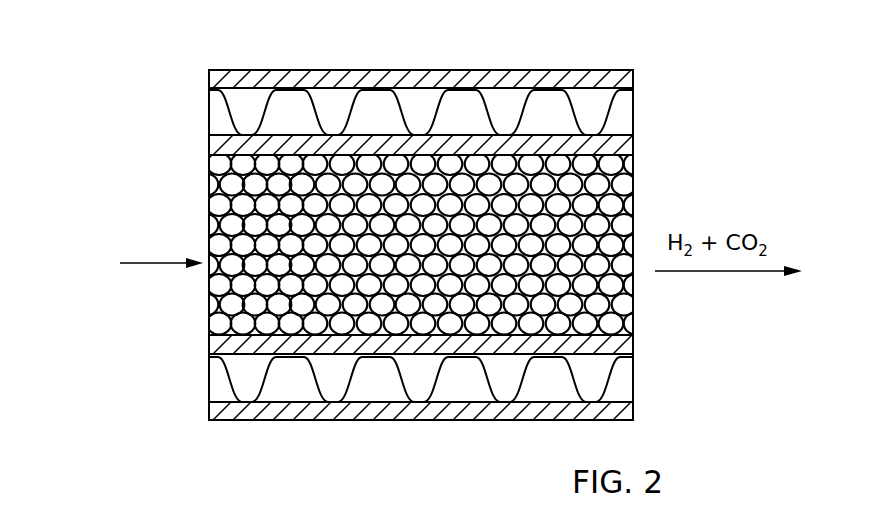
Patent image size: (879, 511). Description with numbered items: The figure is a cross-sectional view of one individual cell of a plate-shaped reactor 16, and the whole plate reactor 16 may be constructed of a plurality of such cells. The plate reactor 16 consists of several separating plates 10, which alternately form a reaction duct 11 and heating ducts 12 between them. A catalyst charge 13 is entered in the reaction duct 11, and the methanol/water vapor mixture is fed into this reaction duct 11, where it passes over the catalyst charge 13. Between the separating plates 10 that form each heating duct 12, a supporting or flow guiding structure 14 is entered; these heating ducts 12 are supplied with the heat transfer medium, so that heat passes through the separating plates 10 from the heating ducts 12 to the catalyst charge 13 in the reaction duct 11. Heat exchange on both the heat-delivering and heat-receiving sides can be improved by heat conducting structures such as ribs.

The separating plates 10 is at (350, 77).
The reaction duct 11 is at (186, 311).
The heating duct 12 is at (602, 103).
The catalyst charge 13 is at (253, 223).
The supporting or flow guiding structure 14 is at (265, 106).
The plate-shaped reactor 16 is at (626, 57).